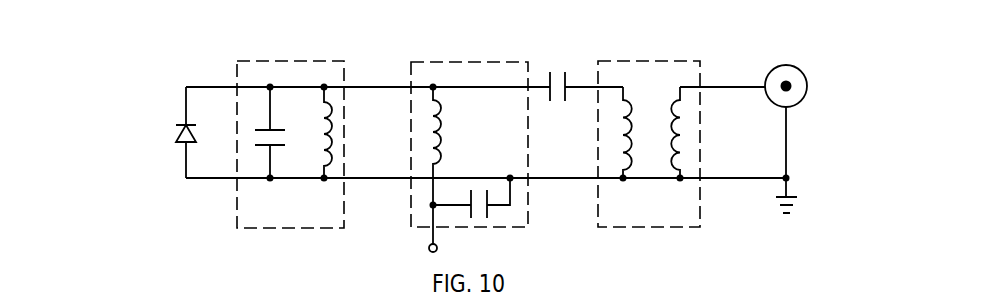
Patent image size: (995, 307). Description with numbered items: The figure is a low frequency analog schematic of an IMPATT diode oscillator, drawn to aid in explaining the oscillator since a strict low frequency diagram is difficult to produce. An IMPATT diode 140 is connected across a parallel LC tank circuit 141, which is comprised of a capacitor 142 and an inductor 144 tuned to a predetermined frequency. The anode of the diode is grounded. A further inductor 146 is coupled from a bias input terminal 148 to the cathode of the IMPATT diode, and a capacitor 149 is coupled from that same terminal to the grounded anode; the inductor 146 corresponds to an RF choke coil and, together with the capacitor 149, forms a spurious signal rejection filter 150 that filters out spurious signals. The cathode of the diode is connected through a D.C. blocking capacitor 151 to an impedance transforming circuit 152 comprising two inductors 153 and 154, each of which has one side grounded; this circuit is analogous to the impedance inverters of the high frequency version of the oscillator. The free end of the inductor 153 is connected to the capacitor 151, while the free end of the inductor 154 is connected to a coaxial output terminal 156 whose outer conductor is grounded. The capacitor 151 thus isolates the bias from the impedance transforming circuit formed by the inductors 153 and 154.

The IMPATT diode 140 is at (176, 135).
The parallel LC tank circuit 141 is at (229, 78).
The capacitor 142 is at (281, 127).
The inductor 144 is at (338, 119).
The inductor 146 is at (444, 124).
The bias input terminal 148 is at (429, 248).
The capacitor 149 is at (514, 198).
The spurious signal rejection filter 150 is at (401, 74).
The D.C. blocking capacitor 151 is at (570, 97).
The impedance transforming circuit 152 is at (629, 56).
The inductor 153 is at (627, 99).
The inductor 154 is at (683, 118).
The coaxial output terminal 156 is at (805, 92).